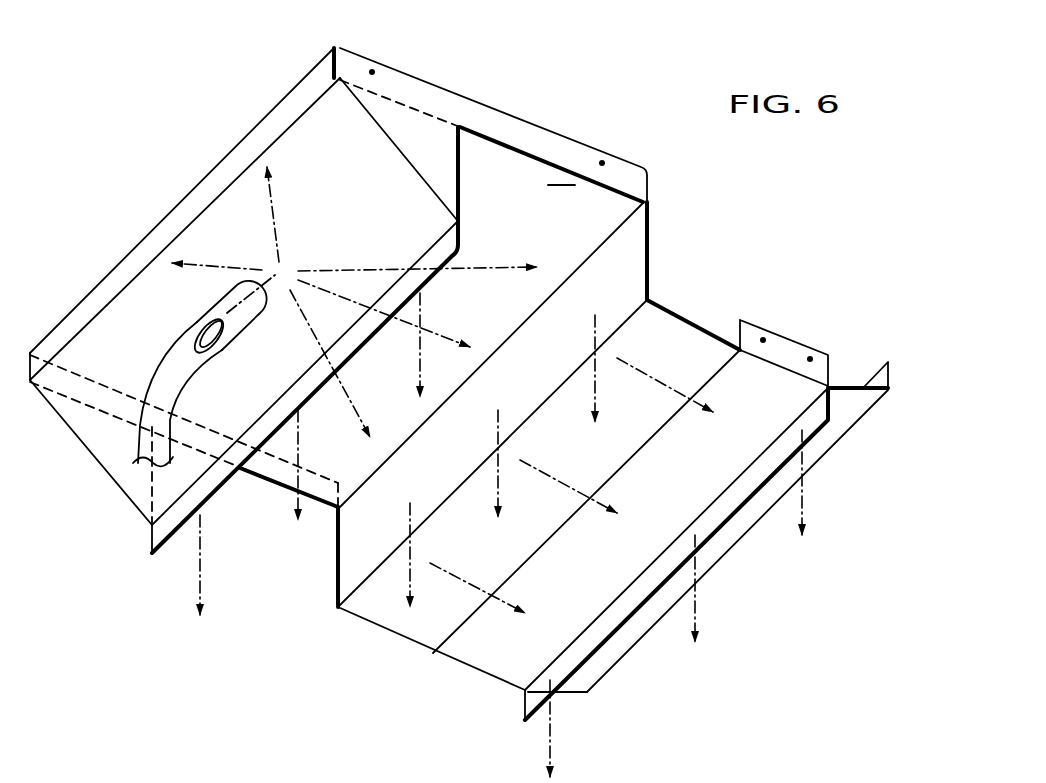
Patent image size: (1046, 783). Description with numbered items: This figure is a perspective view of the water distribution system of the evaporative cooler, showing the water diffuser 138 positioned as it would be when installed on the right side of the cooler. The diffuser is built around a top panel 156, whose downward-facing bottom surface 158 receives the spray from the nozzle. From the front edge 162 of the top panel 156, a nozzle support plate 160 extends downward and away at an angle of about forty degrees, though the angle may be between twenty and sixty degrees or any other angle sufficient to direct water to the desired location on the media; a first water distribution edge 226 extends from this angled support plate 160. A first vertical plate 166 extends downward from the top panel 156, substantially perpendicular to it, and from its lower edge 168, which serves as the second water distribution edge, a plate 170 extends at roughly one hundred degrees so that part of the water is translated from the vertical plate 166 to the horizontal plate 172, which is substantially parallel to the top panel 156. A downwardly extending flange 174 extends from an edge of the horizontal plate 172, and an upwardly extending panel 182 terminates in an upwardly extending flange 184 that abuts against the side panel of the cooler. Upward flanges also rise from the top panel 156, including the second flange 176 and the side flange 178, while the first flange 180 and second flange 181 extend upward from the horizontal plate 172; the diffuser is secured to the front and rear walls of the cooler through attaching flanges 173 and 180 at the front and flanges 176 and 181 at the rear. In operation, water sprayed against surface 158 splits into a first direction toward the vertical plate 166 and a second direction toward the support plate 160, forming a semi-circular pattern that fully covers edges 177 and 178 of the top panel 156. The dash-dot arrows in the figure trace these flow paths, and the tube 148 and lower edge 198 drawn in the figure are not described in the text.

The water diffuser 138 is at (447, 70).
The fluid supply tube 148 is at (163, 385).
The top panel 156 is at (533, 95).
The bottom surface 158 is at (563, 183).
The nozzle support plate 160 is at (307, 133).
The front edge 162 is at (182, 227).
The first vertical plate 166 is at (628, 265).
The lower edge 168 is at (623, 330).
The plate 170 is at (705, 333).
The horizontal plate 172 is at (807, 378).
The attaching flange 173 is at (400, 75).
The downwardly extending flange 174 is at (727, 510).
The second flange 176 is at (67, 390).
The edge 177 is at (587, 263).
The side flange 178 is at (95, 305).
The first flange 180 is at (785, 350).
The second flange 181 is at (477, 673).
The upwardly extending panel 182 is at (840, 427).
The upwardly extending flange 184 is at (897, 360).
The outer edge 198 is at (707, 577).
The first water distribution edge 226 is at (257, 437).